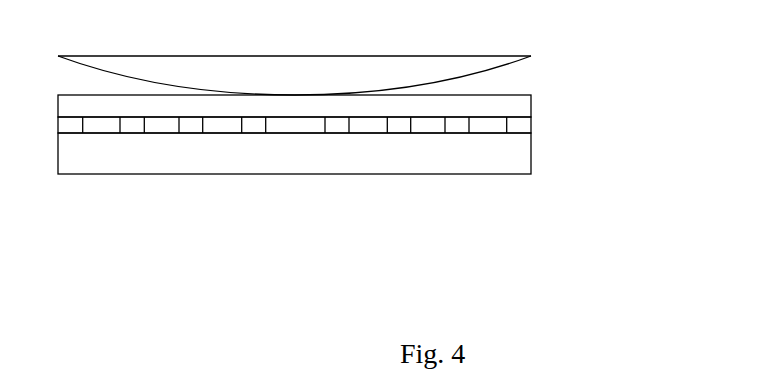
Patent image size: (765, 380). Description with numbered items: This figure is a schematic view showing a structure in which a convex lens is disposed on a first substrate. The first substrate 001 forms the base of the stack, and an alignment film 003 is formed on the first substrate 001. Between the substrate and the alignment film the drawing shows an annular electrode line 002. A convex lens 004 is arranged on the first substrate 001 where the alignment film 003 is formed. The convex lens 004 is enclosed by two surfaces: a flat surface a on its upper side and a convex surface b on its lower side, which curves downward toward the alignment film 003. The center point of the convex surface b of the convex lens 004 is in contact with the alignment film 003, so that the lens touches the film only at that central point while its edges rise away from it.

The first substrate 001 is at (549, 154).
The annular electrode line 002 is at (549, 124).
The alignment film 003 is at (549, 100).
The convex lens 004 is at (352, 60).
The flat surface a is at (365, 56).
The convex surface b is at (470, 75).